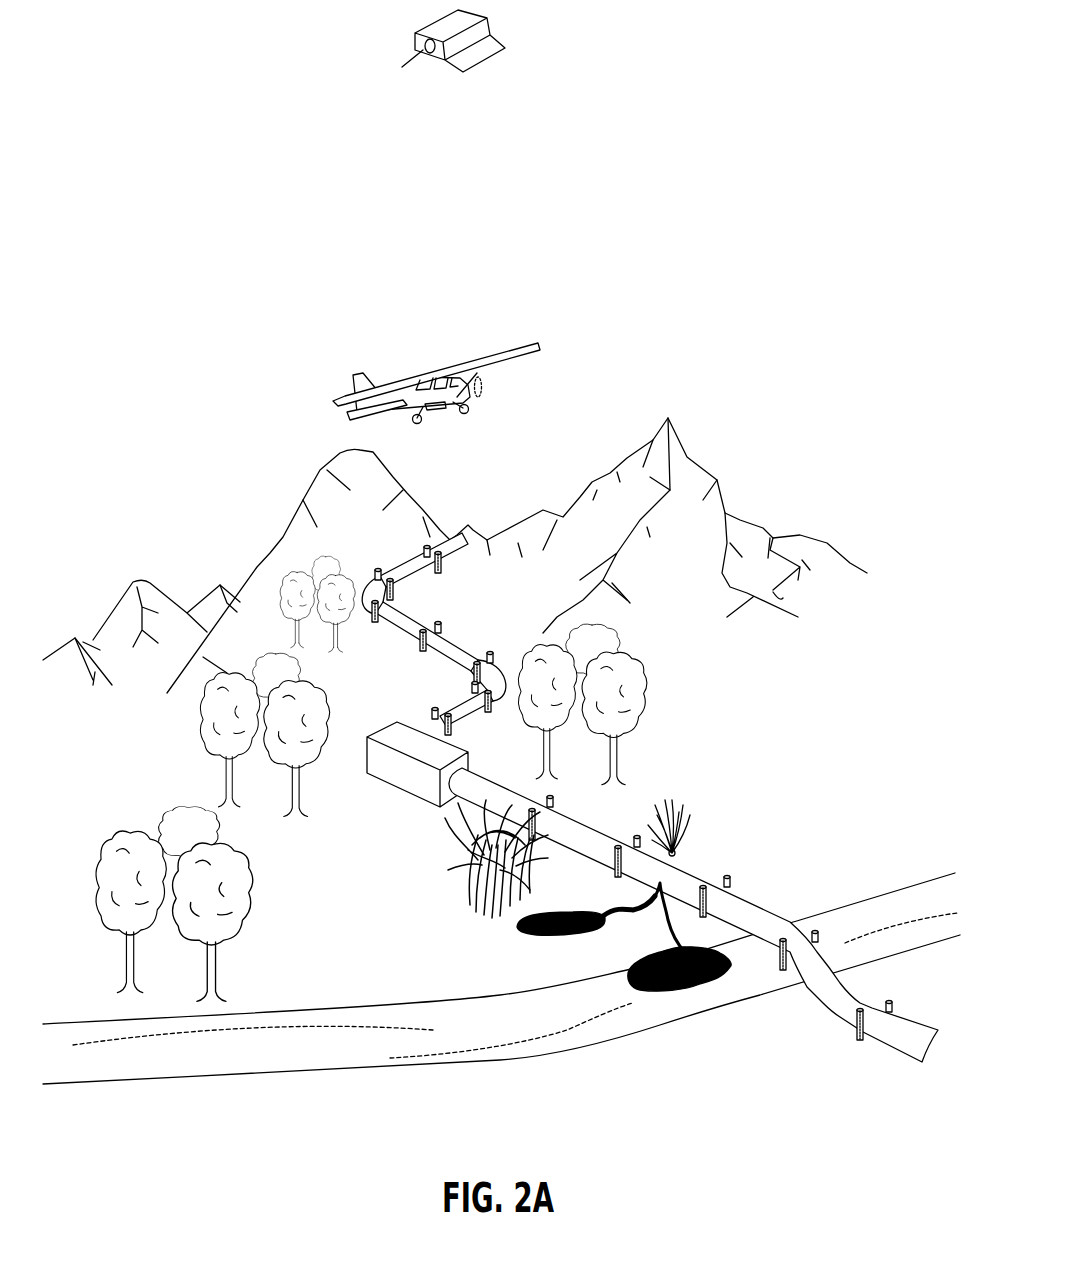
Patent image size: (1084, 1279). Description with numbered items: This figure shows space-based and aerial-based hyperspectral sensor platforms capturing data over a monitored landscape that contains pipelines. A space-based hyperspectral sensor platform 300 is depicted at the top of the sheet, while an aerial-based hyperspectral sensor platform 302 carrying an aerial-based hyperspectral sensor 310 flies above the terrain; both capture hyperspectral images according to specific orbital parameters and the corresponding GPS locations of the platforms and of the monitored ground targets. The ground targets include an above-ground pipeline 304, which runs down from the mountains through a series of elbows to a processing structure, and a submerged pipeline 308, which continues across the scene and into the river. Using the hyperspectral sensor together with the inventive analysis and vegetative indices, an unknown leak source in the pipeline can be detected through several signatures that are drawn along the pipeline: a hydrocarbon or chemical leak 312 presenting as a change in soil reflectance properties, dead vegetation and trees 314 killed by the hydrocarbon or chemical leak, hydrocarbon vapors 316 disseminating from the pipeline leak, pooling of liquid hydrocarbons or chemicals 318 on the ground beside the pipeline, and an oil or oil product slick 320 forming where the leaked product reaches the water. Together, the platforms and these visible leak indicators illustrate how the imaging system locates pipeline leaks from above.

The space-based hyperspectral sensor platform 300 is at (485, 56).
The aerial-based hyperspectral sensor platform 302 is at (410, 378).
The above-ground pipeline 304 is at (407, 570).
The submerged pipeline 308 is at (912, 1027).
The aerial-based hyperspectral sensor 310 is at (436, 410).
The hydrocarbon or chemical leak 312 is at (675, 852).
The dead vegetation and trees 314 is at (457, 863).
The hydrocarbon vapors 316 is at (682, 815).
The pooling of liquid hydrocarbons or chemicals 318 is at (547, 938).
The oil or oil product slick 320 is at (712, 987).